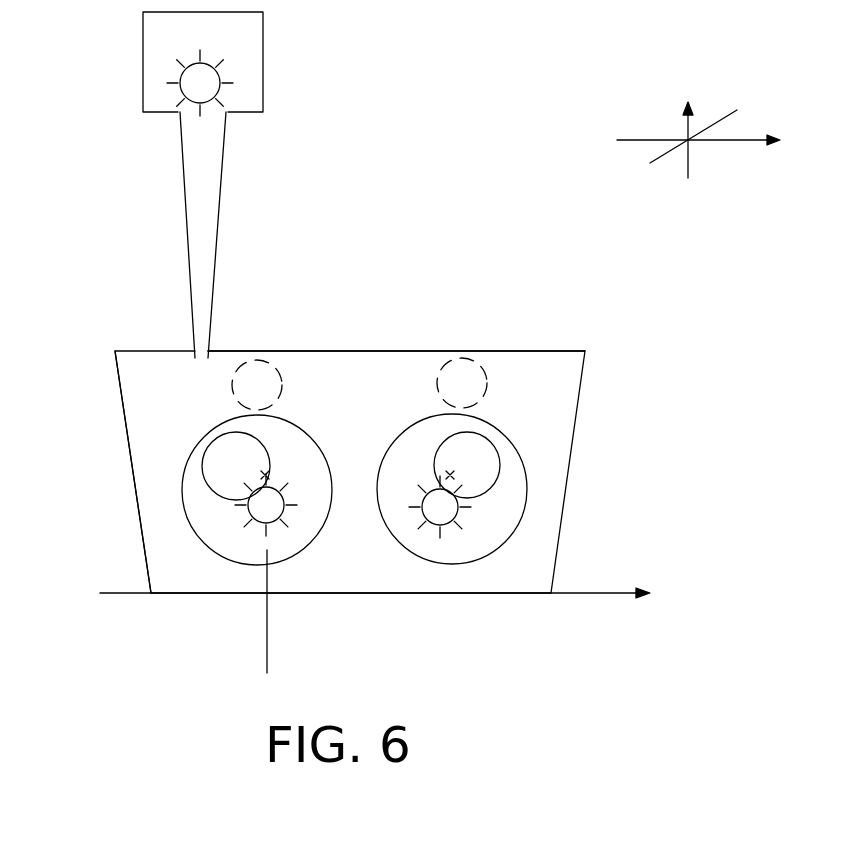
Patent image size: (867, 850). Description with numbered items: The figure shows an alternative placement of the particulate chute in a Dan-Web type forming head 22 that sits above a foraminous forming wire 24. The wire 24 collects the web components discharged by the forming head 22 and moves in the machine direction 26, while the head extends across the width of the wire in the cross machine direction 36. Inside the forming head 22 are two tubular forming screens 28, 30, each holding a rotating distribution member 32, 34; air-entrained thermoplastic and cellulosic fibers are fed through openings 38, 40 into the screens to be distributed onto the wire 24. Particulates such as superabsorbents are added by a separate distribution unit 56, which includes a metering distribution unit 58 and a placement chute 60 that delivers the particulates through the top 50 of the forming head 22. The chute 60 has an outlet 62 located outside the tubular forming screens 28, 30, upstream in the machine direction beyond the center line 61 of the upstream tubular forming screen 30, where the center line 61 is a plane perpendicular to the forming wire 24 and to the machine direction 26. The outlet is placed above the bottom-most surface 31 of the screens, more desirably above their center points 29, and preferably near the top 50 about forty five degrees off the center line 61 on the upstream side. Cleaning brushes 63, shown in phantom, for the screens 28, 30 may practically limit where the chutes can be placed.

The forming head 22 is at (578, 406).
The foraminous forming wire 24 is at (447, 594).
The machine direction 26 is at (628, 597).
The downstream tubular forming screen 28 is at (505, 431).
The center points 29 is at (450, 475).
The upstream tubular forming screen 30 is at (303, 432).
The bottom-most surface 31 is at (238, 565).
The rotating distribution member 32 is at (268, 512).
The rotating distribution member 34 is at (442, 513).
The cross machine direction 36 is at (712, 125).
The opening 38 is at (218, 471).
The opening 40 is at (487, 464).
The top 50 is at (435, 351).
The separate distribution unit 56 is at (263, 58).
The metering distribution unit 58 is at (240, 88).
The placement chute 60 is at (210, 310).
The center line 61 is at (269, 643).
The outlet 62 is at (145, 450).
The cleaning brushes 63 is at (287, 390).